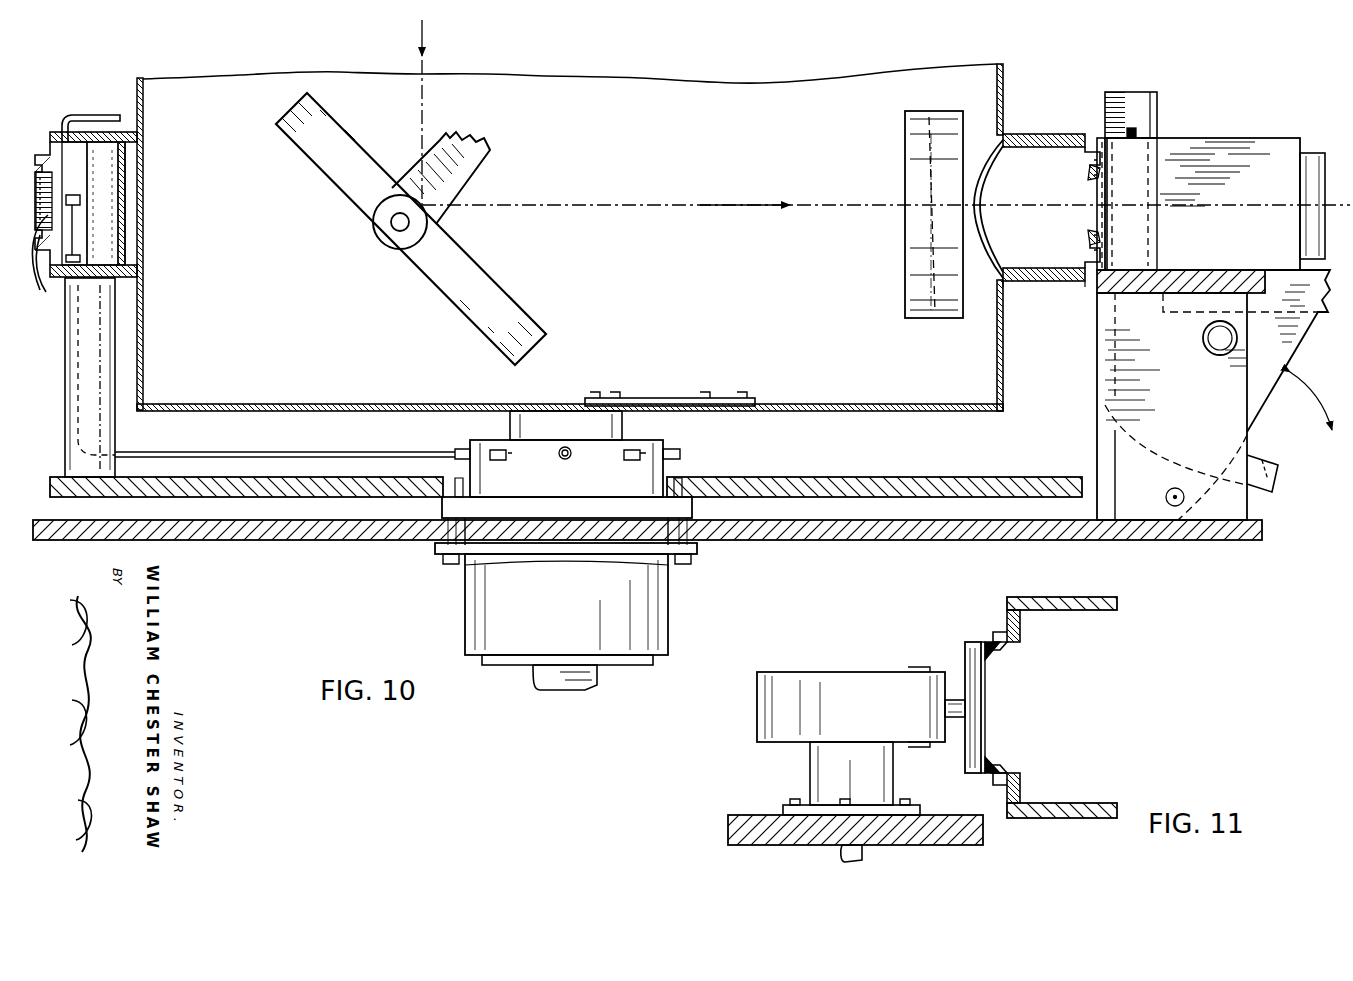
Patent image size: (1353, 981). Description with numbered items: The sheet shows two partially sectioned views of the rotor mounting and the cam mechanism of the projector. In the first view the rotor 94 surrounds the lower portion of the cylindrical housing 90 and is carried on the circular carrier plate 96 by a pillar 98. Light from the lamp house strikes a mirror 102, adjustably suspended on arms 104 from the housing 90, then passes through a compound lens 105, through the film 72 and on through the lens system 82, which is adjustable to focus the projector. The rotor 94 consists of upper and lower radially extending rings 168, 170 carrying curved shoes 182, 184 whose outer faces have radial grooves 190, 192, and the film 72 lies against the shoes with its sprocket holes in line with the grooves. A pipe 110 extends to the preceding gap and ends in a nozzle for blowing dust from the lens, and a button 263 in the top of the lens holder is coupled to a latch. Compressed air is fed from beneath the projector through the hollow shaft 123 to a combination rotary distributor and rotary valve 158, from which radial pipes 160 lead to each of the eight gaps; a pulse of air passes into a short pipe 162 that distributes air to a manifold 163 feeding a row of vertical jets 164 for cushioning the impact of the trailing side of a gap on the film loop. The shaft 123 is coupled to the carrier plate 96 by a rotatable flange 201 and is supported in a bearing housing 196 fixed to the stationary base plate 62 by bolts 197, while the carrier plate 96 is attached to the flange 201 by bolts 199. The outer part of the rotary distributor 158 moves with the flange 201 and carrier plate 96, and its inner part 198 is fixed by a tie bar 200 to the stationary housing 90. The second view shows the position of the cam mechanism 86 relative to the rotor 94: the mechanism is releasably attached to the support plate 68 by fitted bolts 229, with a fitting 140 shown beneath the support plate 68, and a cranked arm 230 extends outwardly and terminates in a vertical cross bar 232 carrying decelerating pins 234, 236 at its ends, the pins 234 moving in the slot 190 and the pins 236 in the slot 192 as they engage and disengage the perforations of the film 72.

In FIG. 10, the base plate 62 is at (1205, 541).
In FIG. 11, the support plate 68 is at (983, 835).
In FIG. 10, the film 72 is at (1108, 188).
In FIG. 10, the lens system 82 is at (1236, 138).
In FIG. 11, the cam mechanism 86 is at (748, 737).
In FIG. 10, the cylindrical housing 90 is at (1005, 80).
In FIG. 10, the rotor 94 is at (1018, 124).
In FIG. 11, the rotor 94 is at (1068, 631).
In FIG. 10, the carrier plate 96 is at (1012, 477).
In FIG. 10, the pillar 98 is at (115, 337).
In FIG. 10, the mirror 102 is at (518, 310).
In FIG. 10, the arms 104 is at (484, 168).
In FIG. 10, the compound lens 105 is at (905, 290).
In FIG. 10, the pipe 110 is at (95, 132).
In FIG. 10, the hollow shaft 123 is at (540, 686).
In FIG. 11, the connector 140 is at (864, 855).
In FIG. 10, the combination rotary distributor and rotary valve 158 is at (583, 533).
In FIG. 10, the radial pipes 160 is at (330, 452).
In FIG. 10, the short pipe 162 is at (82, 211).
In FIG. 10, the manifold 163 is at (50, 184).
In FIG. 10, the vertical jets 164 is at (42, 265).
In FIG. 10, the upper ring 168 is at (1058, 134).
In FIG. 10, the lower ring 170 is at (1055, 283).
In FIG. 10, the curved shoes 182 is at (1090, 171).
In FIG. 10, the curved shoes 184 is at (1090, 239).
In FIG. 11, the radial groove 190 is at (975, 642).
In FIG. 11, the radial groove 192 is at (995, 769).
In FIG. 10, the bearing housing 196 is at (466, 629).
In FIG. 10, the bolts 197 is at (450, 566).
In FIG. 10, the inner part of rotary distributor 198 is at (622, 431).
In FIG. 10, the bolts 199 is at (455, 467).
In FIG. 10, the tie bar 200 is at (692, 398).
In FIG. 10, the flange 201 is at (372, 505).
In FIG. 11, the fitted bolts 229 is at (793, 805).
In FIG. 11, the cranked arm 230 is at (958, 659).
In FIG. 11, the vertical cross bar 232 is at (966, 672).
In FIG. 11, the decelerating pins 234 is at (988, 655).
In FIG. 11, the decelerating pins 236 is at (984, 765).
In FIG. 10, the button 263 is at (1131, 128).